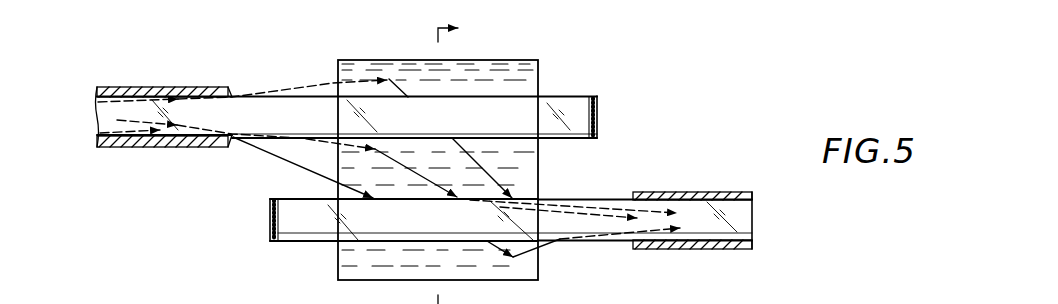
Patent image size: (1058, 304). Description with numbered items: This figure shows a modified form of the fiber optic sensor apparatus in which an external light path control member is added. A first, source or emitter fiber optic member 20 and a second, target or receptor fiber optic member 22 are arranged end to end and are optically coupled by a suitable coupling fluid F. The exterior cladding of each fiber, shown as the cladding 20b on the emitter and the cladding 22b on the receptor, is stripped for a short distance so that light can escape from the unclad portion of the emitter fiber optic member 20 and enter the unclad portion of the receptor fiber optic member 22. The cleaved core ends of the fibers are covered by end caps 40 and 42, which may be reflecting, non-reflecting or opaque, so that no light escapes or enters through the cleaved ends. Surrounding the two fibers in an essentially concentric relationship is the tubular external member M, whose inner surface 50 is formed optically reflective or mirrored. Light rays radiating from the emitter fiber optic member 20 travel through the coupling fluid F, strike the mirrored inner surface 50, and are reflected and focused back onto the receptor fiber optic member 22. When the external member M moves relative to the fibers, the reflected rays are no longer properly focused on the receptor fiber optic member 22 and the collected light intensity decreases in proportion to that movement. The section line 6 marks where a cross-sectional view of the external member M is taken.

The emitter fiber optic member 20 is at (122, 108).
The cladding of first optical fiber 20b is at (146, 147).
The receptor fiber optic member 22 is at (693, 229).
The cladding of second optical fiber 22b is at (698, 192).
The end cap 40 is at (599, 104).
The end cap 42 is at (270, 223).
The external member M is at (517, 60).
The coupling fluid F is at (649, 164).
The section line 6- 6 is at (461, 155).
The inner surface 50 is at (176, 298).